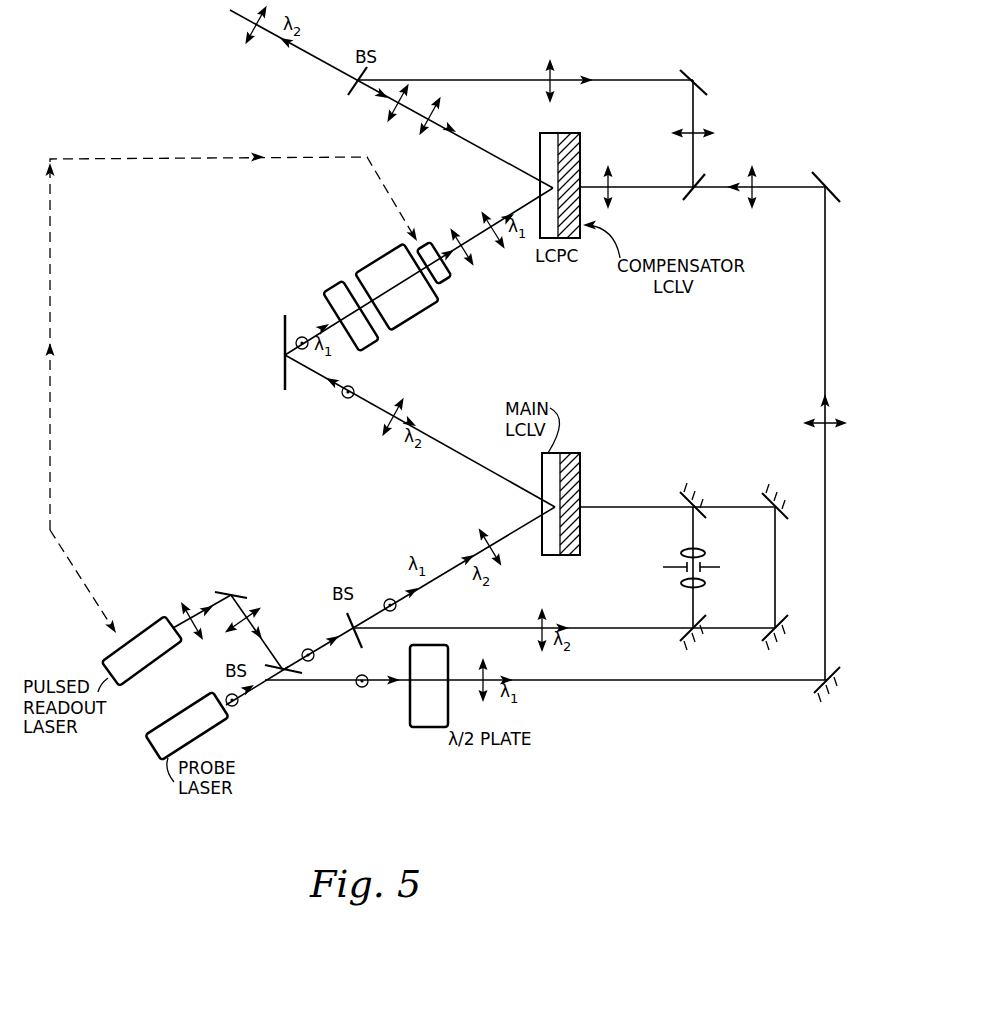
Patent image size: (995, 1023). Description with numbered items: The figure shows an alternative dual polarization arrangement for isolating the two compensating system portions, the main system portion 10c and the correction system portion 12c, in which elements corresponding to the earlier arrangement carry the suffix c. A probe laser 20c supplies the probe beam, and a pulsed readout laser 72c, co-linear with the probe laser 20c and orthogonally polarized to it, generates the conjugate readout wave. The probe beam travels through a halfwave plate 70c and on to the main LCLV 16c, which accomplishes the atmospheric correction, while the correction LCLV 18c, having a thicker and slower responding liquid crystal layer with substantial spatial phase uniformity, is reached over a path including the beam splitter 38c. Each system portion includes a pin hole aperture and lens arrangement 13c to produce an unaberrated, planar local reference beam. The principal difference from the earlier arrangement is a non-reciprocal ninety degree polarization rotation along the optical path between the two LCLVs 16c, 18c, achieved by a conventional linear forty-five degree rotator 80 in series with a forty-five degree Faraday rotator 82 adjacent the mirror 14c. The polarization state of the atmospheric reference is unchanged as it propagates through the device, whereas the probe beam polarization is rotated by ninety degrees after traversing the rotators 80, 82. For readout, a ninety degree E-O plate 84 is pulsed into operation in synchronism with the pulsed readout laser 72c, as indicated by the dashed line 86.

The beam splitter 38c is at (348, 80).
The correction system portion 12c is at (708, 76).
The correction LCLV 18c is at (590, 108).
The mirror 14c is at (283, 330).
The 45° rotator 80 is at (373, 350).
The 45° Faraday rotator 82 is at (420, 321).
The 90° E-O plate 84 is at (450, 291).
The dashed line 86 is at (51, 403).
The main LCLV 16c is at (590, 425).
The main system portion 10c is at (694, 484).
The pin hole aperture and lens arrangement 13c is at (710, 553).
The pulsed readout laser 72c is at (165, 600).
The probe laser 20c is at (223, 726).
The halfwave plate 70c is at (428, 722).